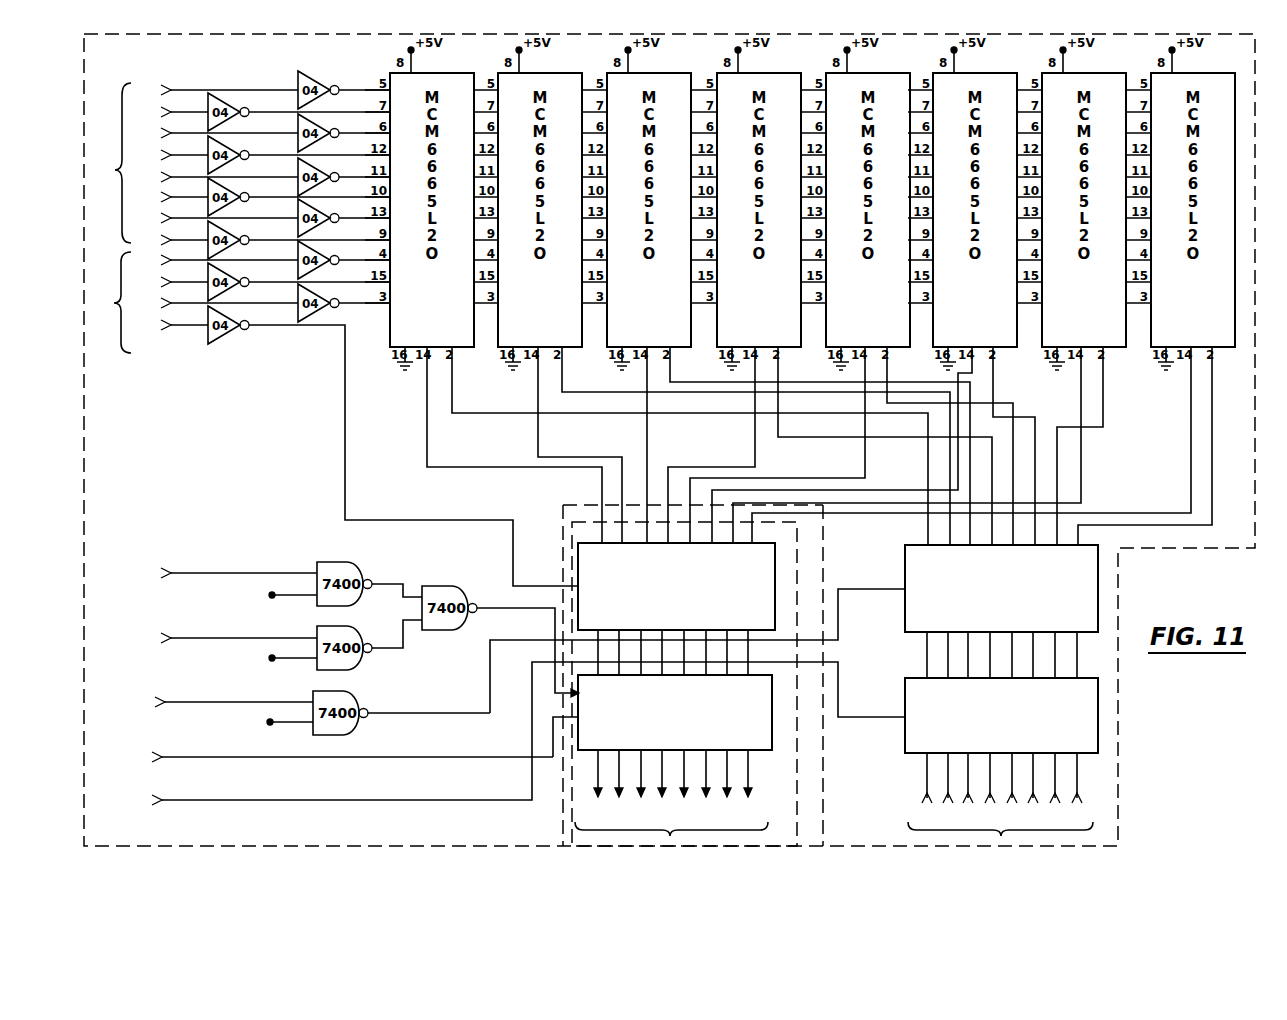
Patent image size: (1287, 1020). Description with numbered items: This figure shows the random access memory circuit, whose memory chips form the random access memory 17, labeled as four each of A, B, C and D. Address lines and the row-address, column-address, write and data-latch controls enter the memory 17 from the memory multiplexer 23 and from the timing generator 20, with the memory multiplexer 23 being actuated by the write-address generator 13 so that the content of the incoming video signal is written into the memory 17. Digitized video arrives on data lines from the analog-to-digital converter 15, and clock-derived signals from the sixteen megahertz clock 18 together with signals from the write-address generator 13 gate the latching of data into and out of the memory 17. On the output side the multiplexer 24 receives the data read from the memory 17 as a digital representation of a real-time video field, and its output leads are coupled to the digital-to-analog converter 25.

The random access memory 17 is at (820, 32).
The multiplexer 24 is at (796, 844).
The memory multiplexer 23 is at (111, 163).
The timing generator 20 is at (148, 423).
The write-address generator 13 is at (141, 718).
The 16 MHz clock 18 is at (165, 708).
The digital-to-analog converter 25 is at (671, 827).
The analog-to-digital converter 15 is at (1000, 827).